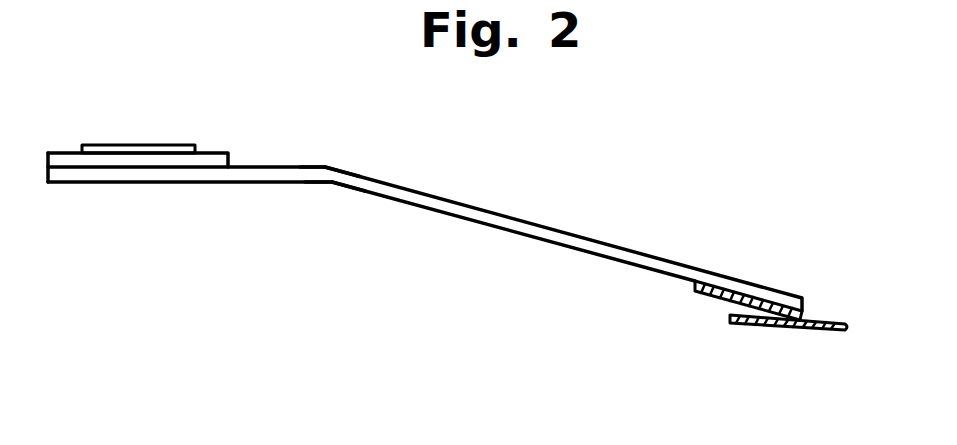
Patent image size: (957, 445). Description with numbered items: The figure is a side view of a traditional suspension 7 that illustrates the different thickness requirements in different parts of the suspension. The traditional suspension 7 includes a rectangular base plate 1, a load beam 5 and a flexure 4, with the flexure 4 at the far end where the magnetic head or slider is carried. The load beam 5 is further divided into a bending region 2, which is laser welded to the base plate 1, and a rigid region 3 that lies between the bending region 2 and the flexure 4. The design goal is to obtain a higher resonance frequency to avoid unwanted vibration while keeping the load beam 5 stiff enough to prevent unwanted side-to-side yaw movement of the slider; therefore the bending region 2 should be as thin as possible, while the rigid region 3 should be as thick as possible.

The base plate 1 is at (215, 152).
The bending region 2 is at (325, 168).
The rigid region 3 is at (507, 208).
The flexure 4 is at (805, 328).
The load beam 5 is at (462, 215).
The traditional suspension 7 is at (337, 203).